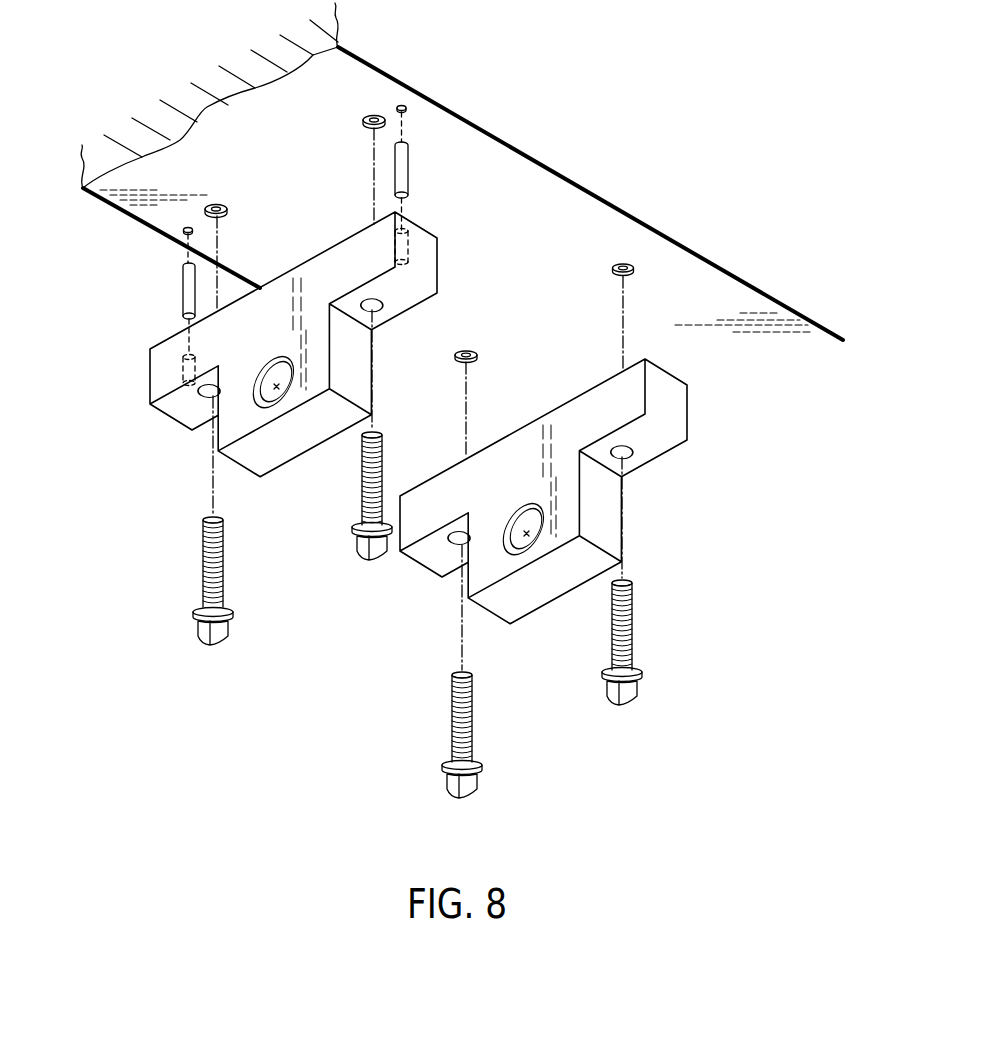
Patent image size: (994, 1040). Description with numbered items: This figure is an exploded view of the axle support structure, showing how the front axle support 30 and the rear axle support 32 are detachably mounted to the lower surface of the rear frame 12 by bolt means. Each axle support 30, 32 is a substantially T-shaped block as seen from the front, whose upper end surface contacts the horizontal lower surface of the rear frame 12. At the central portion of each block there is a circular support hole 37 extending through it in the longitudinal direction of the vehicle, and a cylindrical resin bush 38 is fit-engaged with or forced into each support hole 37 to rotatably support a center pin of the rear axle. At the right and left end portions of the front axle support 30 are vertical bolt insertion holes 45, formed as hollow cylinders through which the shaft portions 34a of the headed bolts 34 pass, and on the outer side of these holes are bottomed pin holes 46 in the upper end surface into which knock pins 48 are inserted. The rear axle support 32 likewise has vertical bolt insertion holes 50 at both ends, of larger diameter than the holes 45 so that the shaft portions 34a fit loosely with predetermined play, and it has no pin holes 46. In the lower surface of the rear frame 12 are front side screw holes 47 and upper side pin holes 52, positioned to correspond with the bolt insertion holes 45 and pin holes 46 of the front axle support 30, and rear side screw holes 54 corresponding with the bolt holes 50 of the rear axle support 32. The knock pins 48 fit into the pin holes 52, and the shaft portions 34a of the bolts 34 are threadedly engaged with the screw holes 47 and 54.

The rear frame 12 is at (208, 100).
The front axle support 30 is at (332, 433).
The rear axle support 32 is at (578, 583).
The headed bolt 34 is at (212, 641).
The shaft portion 34a is at (202, 548).
The support hole 37 is at (277, 390).
The resin bush 38 is at (260, 403).
The bolt insertion hole 45 is at (208, 395).
The pin hole 46 is at (185, 368).
The front side screw hole 47 is at (217, 204).
The knock pin 48 is at (183, 290).
The bolt insertion hole 50 is at (457, 542).
The upper side pin hole 52 is at (184, 232).
The rear side screw hole 54 is at (468, 351).